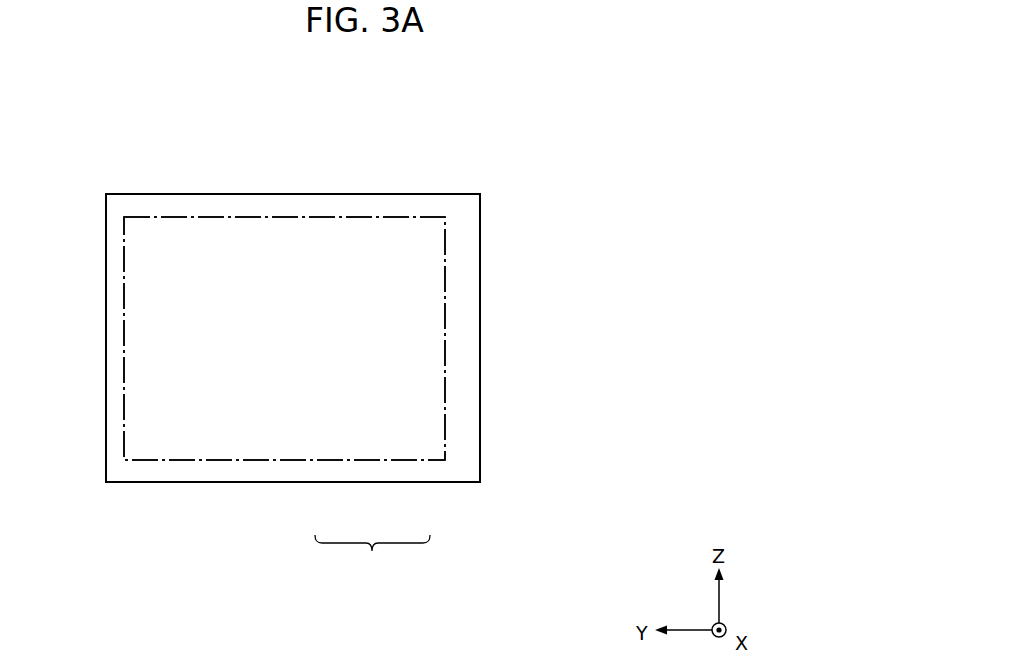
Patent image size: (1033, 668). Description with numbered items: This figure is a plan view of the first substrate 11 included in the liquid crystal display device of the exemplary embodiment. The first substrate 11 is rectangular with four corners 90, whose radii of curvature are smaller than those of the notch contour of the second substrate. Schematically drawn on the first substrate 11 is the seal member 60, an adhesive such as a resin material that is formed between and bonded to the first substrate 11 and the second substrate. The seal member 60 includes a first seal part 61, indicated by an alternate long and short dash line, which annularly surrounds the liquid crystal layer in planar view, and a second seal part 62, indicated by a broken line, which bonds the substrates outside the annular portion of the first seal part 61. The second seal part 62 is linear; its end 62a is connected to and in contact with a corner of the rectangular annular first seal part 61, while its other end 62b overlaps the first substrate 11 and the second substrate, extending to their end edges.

The first substrate 11 is at (542, 119).
The seal member 60 is at (350, 356).
The first seal part 61 is at (343, 463).
The second seal part 62 is at (457, 212).
The end 62a is at (447, 217).
The end 62b is at (468, 217).
The corners 90 is at (106, 194).